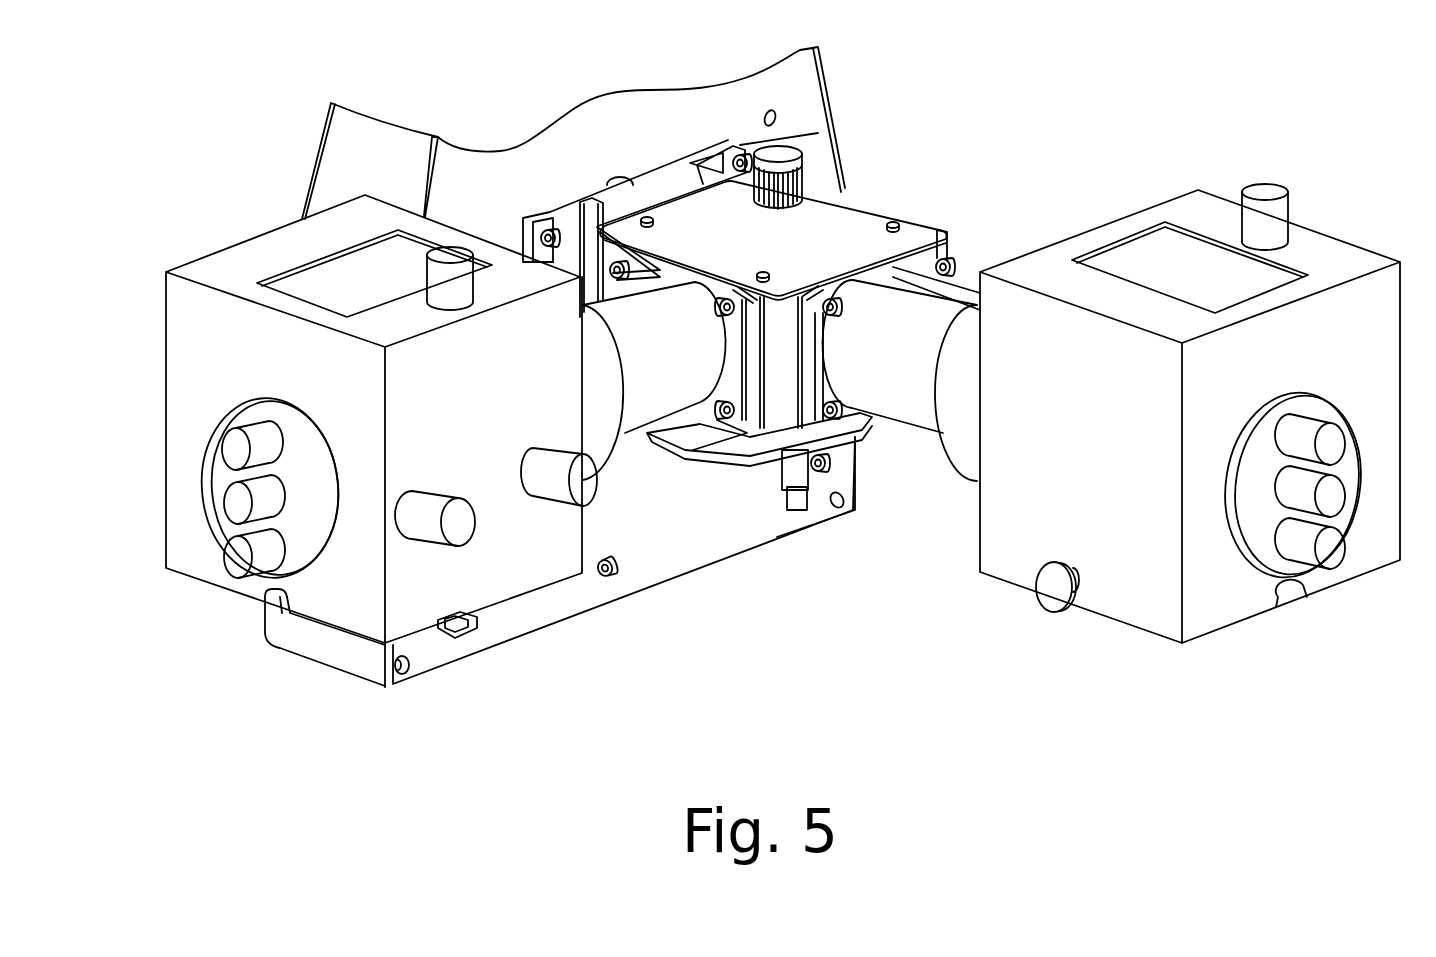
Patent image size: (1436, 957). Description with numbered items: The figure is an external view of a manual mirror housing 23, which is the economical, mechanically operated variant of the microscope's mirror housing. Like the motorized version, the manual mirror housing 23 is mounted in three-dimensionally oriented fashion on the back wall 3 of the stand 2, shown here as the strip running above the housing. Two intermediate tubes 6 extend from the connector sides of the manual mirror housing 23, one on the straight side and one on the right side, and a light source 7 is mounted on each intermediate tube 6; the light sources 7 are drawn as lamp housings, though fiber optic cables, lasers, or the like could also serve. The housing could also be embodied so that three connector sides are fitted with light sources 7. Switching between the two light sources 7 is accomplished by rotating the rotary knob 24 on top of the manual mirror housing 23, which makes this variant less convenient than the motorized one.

The stand 2 is at (341, 152).
The back wall 3 is at (793, 83).
The intermediate tube 6 is at (657, 395).
The light source 7 is at (200, 557).
The manual mirror housing 23 is at (778, 417).
The rotary knob 24 is at (782, 153).